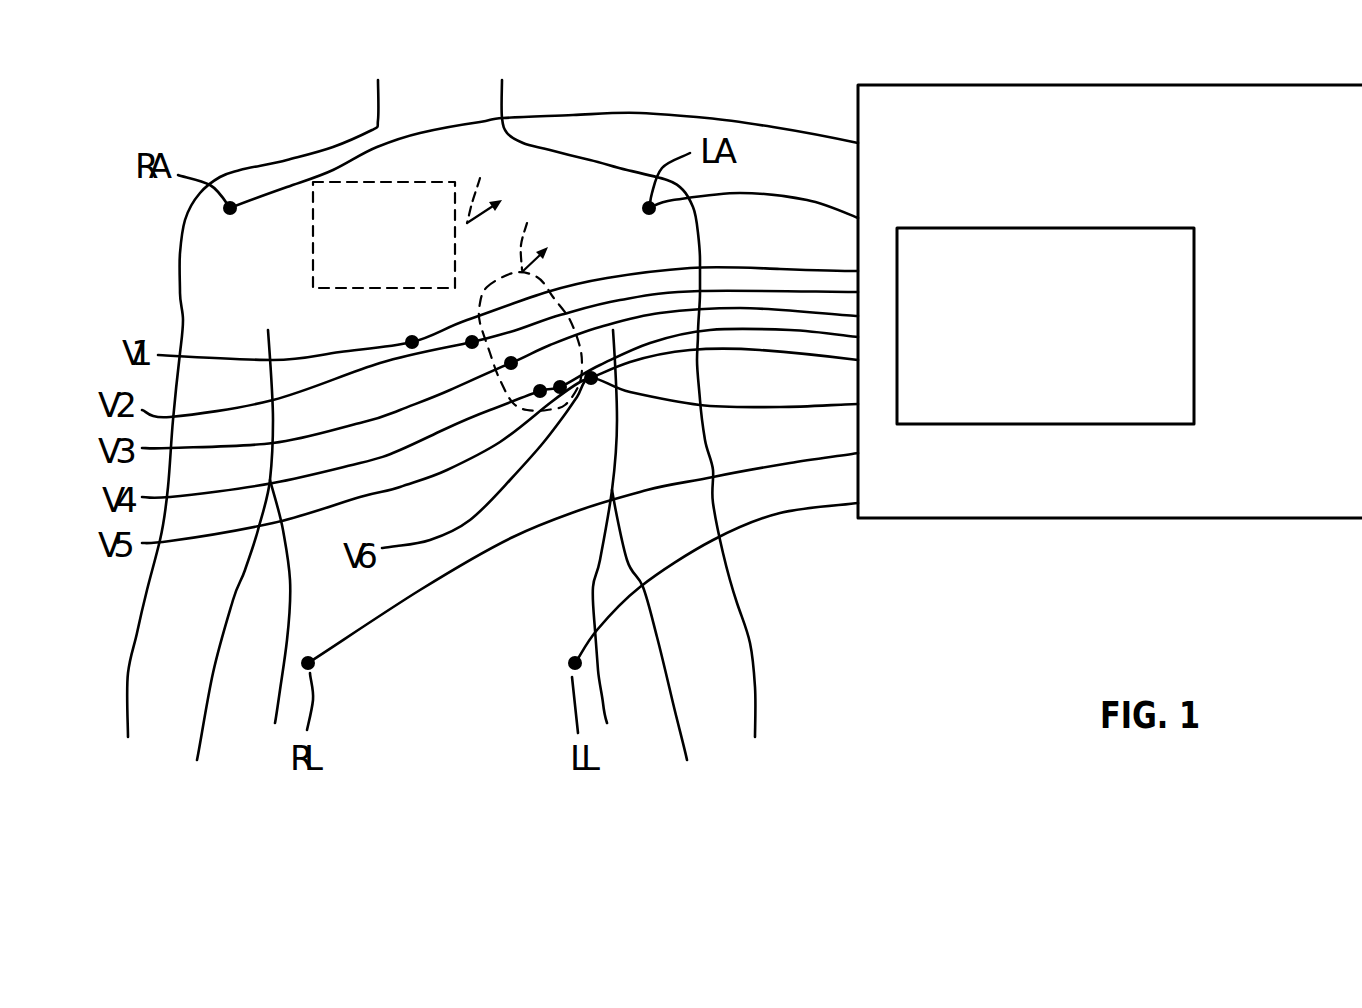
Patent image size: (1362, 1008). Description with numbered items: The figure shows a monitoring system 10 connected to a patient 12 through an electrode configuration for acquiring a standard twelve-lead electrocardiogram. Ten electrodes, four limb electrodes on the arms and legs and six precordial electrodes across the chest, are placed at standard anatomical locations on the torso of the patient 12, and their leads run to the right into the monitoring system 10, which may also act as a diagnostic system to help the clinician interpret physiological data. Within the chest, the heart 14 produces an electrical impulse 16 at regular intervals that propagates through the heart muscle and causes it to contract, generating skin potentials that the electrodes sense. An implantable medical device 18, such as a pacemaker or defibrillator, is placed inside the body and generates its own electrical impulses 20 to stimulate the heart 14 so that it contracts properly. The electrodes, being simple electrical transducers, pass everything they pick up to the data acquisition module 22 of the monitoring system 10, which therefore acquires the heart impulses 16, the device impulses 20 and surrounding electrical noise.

The monitoring system 10 is at (1115, 85).
The patient 12 is at (125, 678).
The heart 14 is at (545, 420).
The electrical impulse 16 is at (545, 230).
The implantable medical device 18 is at (313, 260).
The electrical impulses 20 is at (496, 184).
The data acquisition module 22 is at (1047, 423).